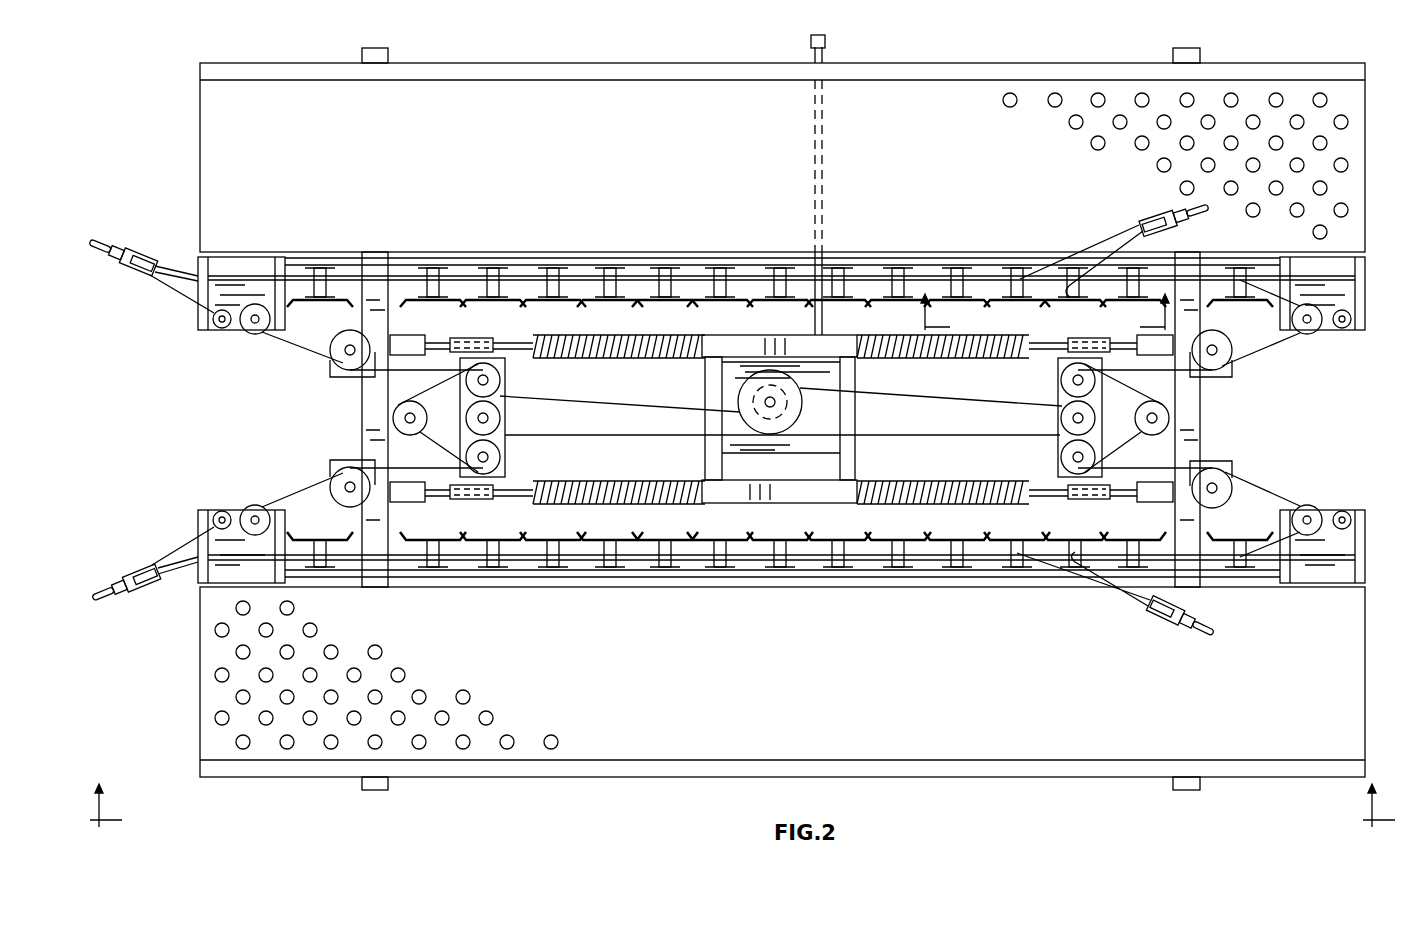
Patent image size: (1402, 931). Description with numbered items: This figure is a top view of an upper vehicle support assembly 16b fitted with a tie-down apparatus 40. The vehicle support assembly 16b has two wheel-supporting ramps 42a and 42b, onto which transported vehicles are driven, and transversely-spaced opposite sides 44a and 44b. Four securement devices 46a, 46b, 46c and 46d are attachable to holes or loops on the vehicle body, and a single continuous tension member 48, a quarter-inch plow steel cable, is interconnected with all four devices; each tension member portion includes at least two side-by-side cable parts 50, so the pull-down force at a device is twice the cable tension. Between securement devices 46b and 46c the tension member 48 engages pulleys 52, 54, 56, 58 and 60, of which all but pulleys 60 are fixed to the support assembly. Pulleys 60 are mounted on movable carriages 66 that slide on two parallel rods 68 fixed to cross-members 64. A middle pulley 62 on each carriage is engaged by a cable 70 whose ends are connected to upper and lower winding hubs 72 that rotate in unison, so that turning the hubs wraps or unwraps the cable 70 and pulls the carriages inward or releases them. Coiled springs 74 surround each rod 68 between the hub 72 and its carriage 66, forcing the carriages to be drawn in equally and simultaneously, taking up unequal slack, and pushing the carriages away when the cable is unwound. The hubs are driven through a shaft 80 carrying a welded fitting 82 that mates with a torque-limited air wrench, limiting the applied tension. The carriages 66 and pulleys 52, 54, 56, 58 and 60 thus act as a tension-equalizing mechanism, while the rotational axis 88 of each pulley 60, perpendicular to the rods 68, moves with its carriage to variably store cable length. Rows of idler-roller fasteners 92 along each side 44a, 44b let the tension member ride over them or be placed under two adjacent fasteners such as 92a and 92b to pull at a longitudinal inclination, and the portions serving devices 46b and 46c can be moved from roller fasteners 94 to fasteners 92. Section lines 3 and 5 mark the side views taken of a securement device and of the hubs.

The upper vehicle support assembly 16b is at (1085, 780).
The tie-down apparatus 40 is at (575, 228).
The wheel-supporting ramp 42a is at (268, 750).
The wheel-supporting ramp 42b is at (1297, 98).
The opposite side 44a is at (781, 586).
The opposite side 44b is at (690, 250).
The securement device 46a is at (1216, 635).
The securement device 46b is at (100, 610).
The securement device 46c is at (105, 232).
The securement device 46d is at (1208, 212).
The tension member 48 is at (270, 345).
The side-by-side cable parts 50 is at (185, 268).
The pulley 52 is at (211, 319).
The pulley 54 is at (250, 333).
The pulley 56 is at (340, 370).
The pulley 58 is at (393, 418).
The pulley 60 is at (502, 380).
The middle pulley 62 is at (468, 430).
The cross-member 64 is at (375, 792).
The movable carriage 66 is at (462, 380).
The rod 68 is at (513, 338).
The cable 70 is at (618, 410).
The winding hub 72 is at (790, 400).
The coiled spring 74 is at (622, 482).
The shaft 80 is at (825, 155).
The fitting 82 is at (826, 42).
The rotational axis 88 is at (1102, 457).
The fastener 92 is at (897, 568).
The fastener 92a is at (1017, 570).
The fastener 92b is at (1075, 575).
The roller fastener 94 is at (195, 290).
The section line 3- 3 is at (1032, 313).
The section line 5- 5 is at (742, 822).